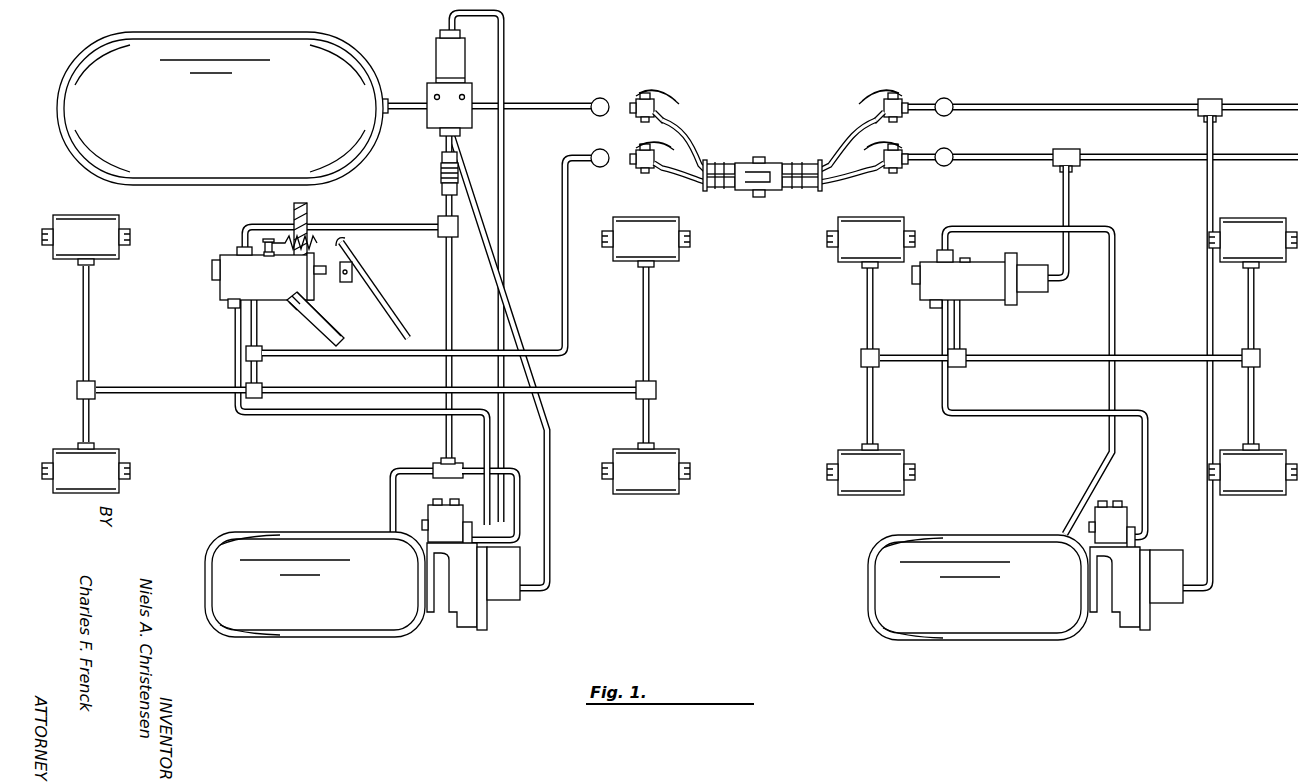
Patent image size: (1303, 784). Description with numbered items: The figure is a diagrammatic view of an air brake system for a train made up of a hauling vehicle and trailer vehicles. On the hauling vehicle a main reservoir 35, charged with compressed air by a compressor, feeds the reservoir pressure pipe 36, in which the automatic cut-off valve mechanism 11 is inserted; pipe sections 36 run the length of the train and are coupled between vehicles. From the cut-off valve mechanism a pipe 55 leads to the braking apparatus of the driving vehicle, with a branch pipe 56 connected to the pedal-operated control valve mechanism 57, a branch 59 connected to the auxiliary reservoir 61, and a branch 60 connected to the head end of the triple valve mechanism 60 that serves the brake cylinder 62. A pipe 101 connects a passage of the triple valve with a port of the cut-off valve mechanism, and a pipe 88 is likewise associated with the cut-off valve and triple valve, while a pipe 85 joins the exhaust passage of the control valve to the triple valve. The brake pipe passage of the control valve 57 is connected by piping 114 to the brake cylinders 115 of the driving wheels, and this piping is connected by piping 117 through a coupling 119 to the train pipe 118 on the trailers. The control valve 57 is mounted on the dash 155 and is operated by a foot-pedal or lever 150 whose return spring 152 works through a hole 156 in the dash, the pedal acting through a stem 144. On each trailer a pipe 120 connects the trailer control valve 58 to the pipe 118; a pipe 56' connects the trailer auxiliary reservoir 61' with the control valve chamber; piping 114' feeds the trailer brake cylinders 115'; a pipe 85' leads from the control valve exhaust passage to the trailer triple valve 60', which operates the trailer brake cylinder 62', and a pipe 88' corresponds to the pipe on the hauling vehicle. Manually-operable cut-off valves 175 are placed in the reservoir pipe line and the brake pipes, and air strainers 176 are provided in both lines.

The pressure regulating valve 11 is at (452, 67).
The main reservoir 35 is at (335, 62).
The reservoir pressure pipe 36 is at (399, 100).
The pipe 55 is at (446, 263).
The branch pipe 56 is at (351, 225).
The control valve mechanism 57 is at (222, 284).
The control valve 58 is at (928, 283).
The branch pipe 59 is at (410, 467).
The branch pipe 60 is at (481, 501).
The auxiliary reservoir 61 is at (315, 570).
The brake cylinder 62 is at (473, 599).
The pipe 85 is at (362, 412).
The pipe 88 is at (515, 356).
The pipe 101 is at (502, 223).
The piping 114 is at (356, 354).
The brake cylinders 115 is at (380, 347).
The piping 117 is at (563, 279).
The pipe 118 is at (1000, 157).
The coupling 119 is at (762, 165).
The pipe 120 is at (1060, 188).
The stem 144 is at (319, 296).
The foot-pedal or lever 150 is at (375, 311).
The spring 152 is at (318, 242).
The dash 155 is at (315, 319).
The hole 156 is at (308, 220).
The manually-operable cut-off valves 175 is at (648, 97).
The air strainers 176 is at (602, 98).
The pipe 56' is at (1028, 366).
The pipe 85' is at (1045, 418).
The pipe 88' is at (1190, 352).
The piping 114' is at (1039, 356).
The brake cylinders 115' is at (1042, 367).
The relay valve 60' is at (1112, 525).
The reservoir 61' is at (978, 571).
The brake cylinder 62' is at (1136, 603).